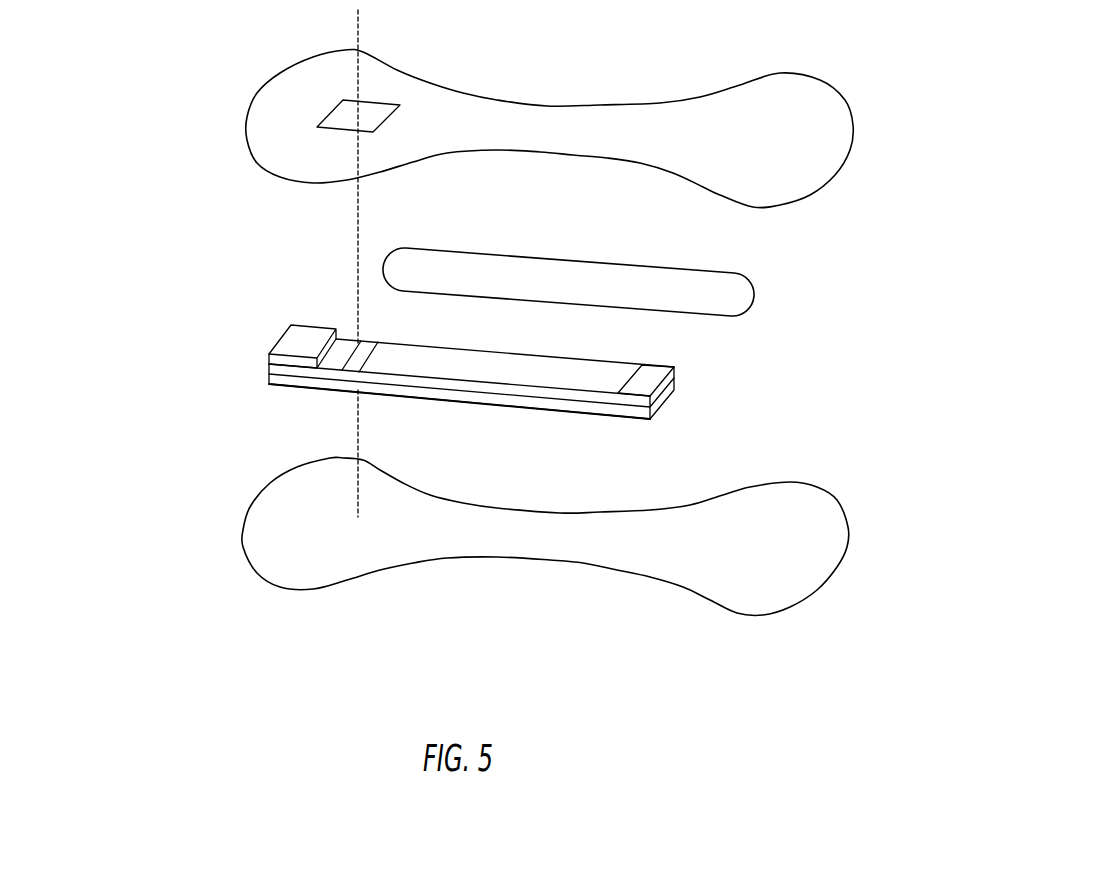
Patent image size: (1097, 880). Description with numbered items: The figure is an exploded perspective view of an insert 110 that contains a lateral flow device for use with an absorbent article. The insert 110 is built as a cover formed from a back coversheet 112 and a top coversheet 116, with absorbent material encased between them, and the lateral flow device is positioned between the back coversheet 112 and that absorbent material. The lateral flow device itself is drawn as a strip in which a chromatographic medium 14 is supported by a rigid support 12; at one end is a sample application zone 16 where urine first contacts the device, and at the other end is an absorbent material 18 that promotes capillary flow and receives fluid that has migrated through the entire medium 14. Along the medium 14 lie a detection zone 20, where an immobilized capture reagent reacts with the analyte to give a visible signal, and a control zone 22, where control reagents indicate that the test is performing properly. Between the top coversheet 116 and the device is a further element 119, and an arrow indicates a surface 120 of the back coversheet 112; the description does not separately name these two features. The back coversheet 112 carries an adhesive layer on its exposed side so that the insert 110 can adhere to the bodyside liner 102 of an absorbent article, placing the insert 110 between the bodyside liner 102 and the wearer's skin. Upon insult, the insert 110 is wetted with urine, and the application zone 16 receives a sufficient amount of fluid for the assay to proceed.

The rigid support 12 is at (583, 408).
The chromatographic medium 14 is at (497, 388).
The sample application zone 16 is at (656, 372).
The absorbent material 18 is at (343, 110).
The detection zone 20 is at (366, 352).
The control zone 22 is at (368, 357).
The bodyside liner 102 is at (248, 368).
The insert 110 is at (950, 253).
The back coversheet 112 is at (821, 547).
The top coversheet 116 is at (823, 135).
The spacer strip 119 is at (754, 304).
The adhesive surface 120 is at (417, 579).